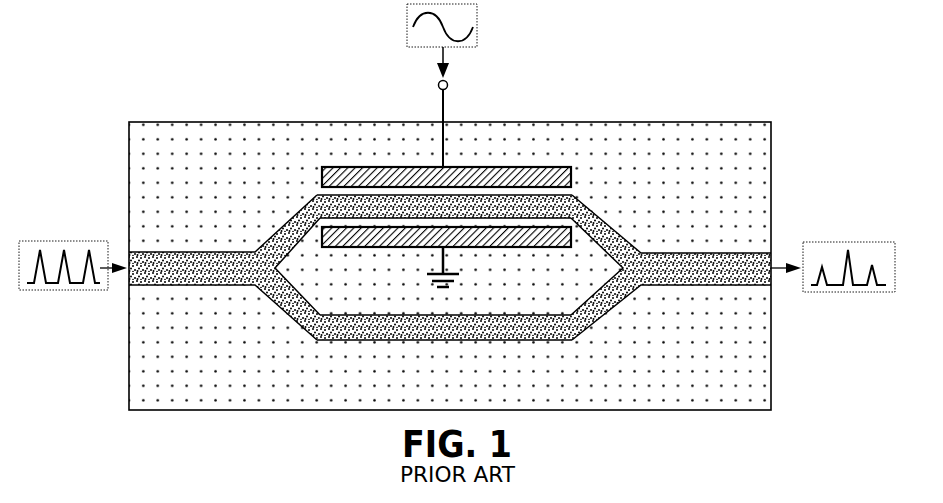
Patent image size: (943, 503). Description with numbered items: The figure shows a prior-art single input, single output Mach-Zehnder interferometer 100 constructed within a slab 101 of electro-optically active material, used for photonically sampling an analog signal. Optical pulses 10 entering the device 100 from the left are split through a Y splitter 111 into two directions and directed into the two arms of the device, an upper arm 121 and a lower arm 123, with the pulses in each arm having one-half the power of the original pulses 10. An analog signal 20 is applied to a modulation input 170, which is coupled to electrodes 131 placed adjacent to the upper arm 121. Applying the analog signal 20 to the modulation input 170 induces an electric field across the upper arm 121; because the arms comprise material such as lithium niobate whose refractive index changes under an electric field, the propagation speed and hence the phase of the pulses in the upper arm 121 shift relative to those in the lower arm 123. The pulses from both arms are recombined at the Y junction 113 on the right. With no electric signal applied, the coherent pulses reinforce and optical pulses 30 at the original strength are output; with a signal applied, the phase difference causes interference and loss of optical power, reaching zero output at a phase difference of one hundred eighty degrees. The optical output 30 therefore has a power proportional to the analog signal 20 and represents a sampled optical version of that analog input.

The optical pulses 10 is at (72, 242).
The analog signal 20 is at (477, 20).
The optical pulses 30 is at (854, 242).
The Mach-Zehnder interferometer 100 is at (450, 240).
The slab 101 is at (672, 122).
The Y splitter 111 is at (249, 300).
The Y junction 113 is at (648, 235).
The upper arm 121 is at (573, 194).
The lower arm 123 is at (450, 343).
The electrodes 131 is at (358, 167).
The modulation input 170 is at (447, 107).